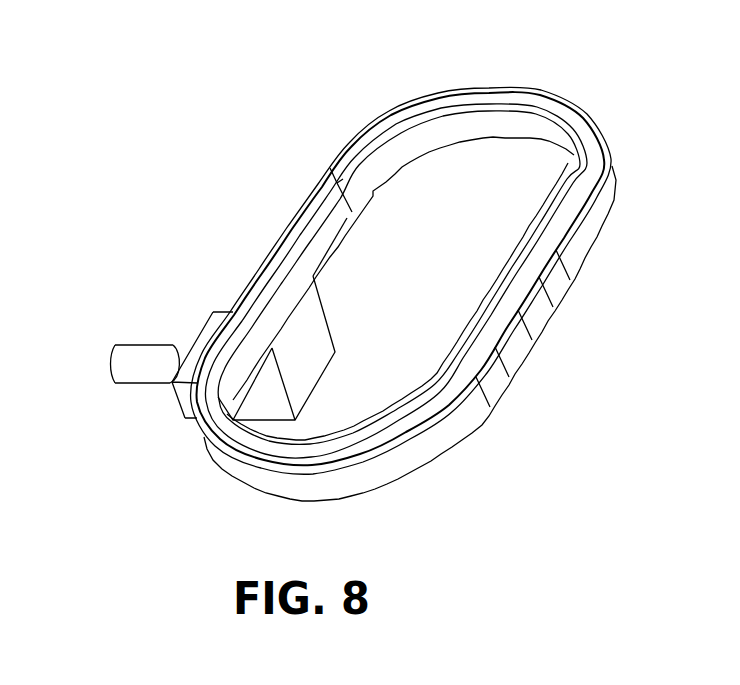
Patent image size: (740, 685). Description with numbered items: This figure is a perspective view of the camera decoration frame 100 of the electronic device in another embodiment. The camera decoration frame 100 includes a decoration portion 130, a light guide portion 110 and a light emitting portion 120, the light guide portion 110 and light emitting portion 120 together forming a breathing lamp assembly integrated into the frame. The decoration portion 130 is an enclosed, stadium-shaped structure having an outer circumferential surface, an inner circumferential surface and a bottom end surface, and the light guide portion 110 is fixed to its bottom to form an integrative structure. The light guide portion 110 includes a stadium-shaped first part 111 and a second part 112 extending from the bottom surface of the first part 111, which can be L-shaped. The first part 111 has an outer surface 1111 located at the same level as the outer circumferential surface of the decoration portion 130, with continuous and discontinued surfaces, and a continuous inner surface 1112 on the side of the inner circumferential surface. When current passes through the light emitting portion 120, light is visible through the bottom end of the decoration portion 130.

The camera decoration frame 100 is at (113, 32).
The light guide portion 110 is at (421, 236).
The first part 111 is at (323, 246).
The second part 112 is at (322, 352).
The outer surface 1111 is at (413, 462).
The inner surface 1112 is at (415, 147).
The light emitting portion 120 is at (137, 370).
The decoration portion 130 is at (478, 96).